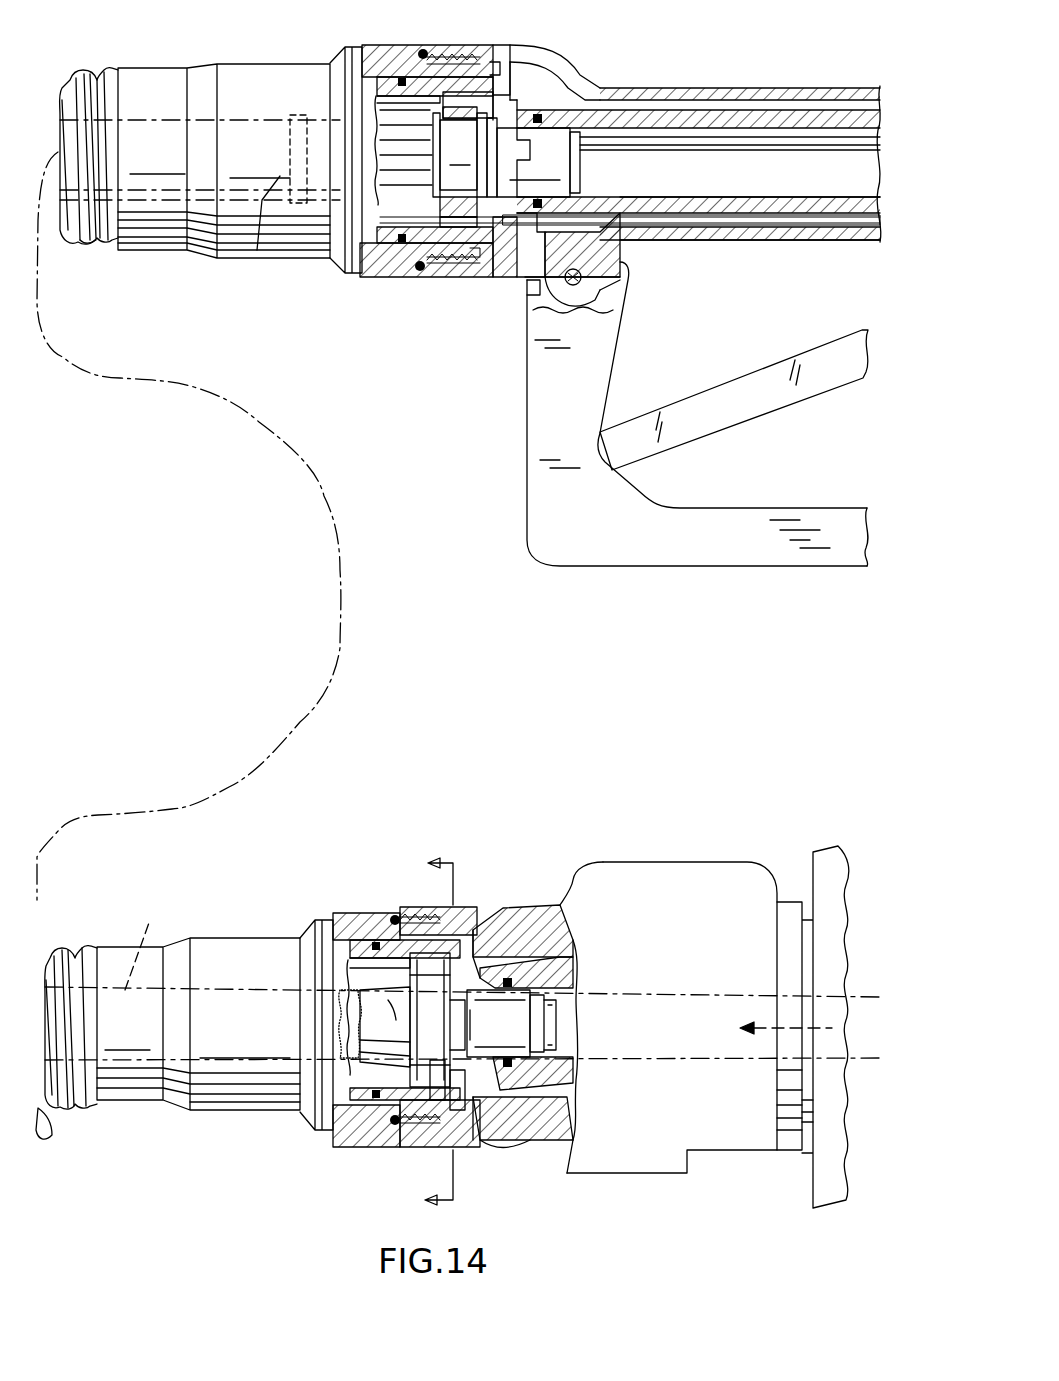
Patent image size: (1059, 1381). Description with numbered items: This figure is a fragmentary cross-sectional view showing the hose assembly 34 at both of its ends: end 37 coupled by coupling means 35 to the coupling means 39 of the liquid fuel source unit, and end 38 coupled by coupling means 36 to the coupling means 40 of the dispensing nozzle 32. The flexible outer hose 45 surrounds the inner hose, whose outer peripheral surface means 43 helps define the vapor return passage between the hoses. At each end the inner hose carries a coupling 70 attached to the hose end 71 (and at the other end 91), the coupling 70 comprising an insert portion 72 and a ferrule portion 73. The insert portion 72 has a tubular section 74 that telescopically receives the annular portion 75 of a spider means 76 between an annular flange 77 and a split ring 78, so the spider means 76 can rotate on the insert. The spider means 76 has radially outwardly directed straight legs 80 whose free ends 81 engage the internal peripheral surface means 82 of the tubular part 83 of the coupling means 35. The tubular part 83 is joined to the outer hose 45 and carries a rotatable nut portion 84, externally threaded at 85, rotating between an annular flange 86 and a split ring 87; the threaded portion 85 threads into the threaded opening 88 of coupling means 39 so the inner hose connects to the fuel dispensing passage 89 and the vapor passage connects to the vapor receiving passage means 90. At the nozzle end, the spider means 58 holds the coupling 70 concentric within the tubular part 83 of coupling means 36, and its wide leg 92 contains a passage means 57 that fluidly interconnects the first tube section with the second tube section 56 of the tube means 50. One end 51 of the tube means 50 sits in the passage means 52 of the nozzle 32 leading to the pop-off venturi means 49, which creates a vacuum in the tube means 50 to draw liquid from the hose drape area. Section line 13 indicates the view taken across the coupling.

The section line 13- 13 is at (453, 1033).
The dispensing nozzle 32 is at (748, 88).
The hose assembly 34 is at (82, 82).
The coupling means 35 is at (248, 938).
The coupling means 36 is at (274, 64).
The end 37 is at (64, 946).
The end 38 is at (106, 72).
The coupling means 39 is at (500, 900).
The coupling means 40 is at (450, 57).
The outer peripheral surface means 43 is at (143, 943).
The flexible outer hose 45 is at (88, 242).
The pop-off venturi means 49 is at (790, 235).
The tube means 50 is at (503, 232).
The end 51 is at (592, 217).
The passage means 52 is at (686, 210).
The second tube section 56 is at (390, 240).
The passage means 57 is at (460, 240).
The spider means 58 is at (480, 105).
The coupling 70 is at (553, 128).
The end 71 is at (338, 1001).
The insert portion 72 is at (545, 1045).
The ferrule portion 73 is at (370, 1100).
The tubular section 74 is at (514, 935).
The annular portion 75 is at (428, 1095).
The spider means 76 is at (462, 1010).
The annular flange 77 is at (385, 1027).
The split ring 78 is at (455, 975).
The legs 80 is at (450, 1085).
The free ends 81 is at (437, 1090).
The internal peripheral surface means 82 is at (493, 80).
The tubular part 83 is at (418, 85).
The rotatable nut portion 84 is at (348, 913).
The threaded portion 85 is at (400, 912).
The annular flange 86 is at (320, 908).
The split ring 87 is at (490, 1135).
The threaded opening 88 is at (375, 1150).
The fuel dispensing passage 89 is at (560, 1066).
The vapor receiving passage means 90 is at (567, 942).
The end 91 is at (262, 258).
The leg 92 is at (470, 250).